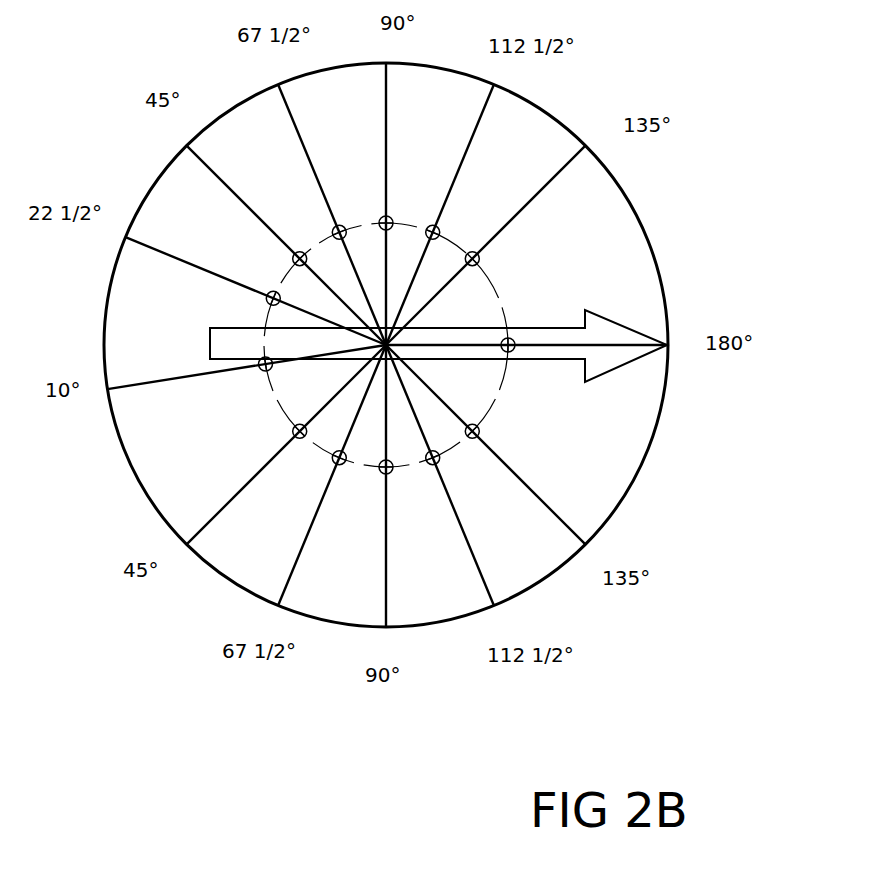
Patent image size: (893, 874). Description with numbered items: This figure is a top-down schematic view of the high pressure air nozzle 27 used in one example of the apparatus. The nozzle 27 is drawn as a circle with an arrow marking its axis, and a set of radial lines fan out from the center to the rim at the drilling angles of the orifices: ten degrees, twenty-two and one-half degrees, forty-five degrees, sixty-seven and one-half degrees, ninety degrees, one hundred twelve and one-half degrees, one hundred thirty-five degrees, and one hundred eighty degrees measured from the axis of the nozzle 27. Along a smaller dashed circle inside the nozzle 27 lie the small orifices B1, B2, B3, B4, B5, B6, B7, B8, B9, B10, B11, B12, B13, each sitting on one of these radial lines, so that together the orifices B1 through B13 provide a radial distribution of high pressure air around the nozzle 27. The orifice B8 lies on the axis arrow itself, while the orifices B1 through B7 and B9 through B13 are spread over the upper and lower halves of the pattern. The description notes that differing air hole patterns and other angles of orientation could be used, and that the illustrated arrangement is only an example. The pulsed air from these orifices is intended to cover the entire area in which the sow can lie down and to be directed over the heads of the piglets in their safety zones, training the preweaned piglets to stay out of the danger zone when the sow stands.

The high pressure air nozzle 27 is at (466, 345).
The orifice B1 is at (260, 369).
The orifice B2 is at (265, 297).
The orifice B3 is at (293, 255).
The orifice B4 is at (333, 227).
The orifice B5 is at (382, 216).
The orifice B6 is at (432, 224).
The orifice B7 is at (477, 252).
The orifice B8 is at (514, 339).
The orifice B9 is at (476, 438).
The orifice B10 is at (432, 466).
The orifice B11 is at (383, 474).
The orifice B12 is at (333, 464).
The orifice B13 is at (292, 435).